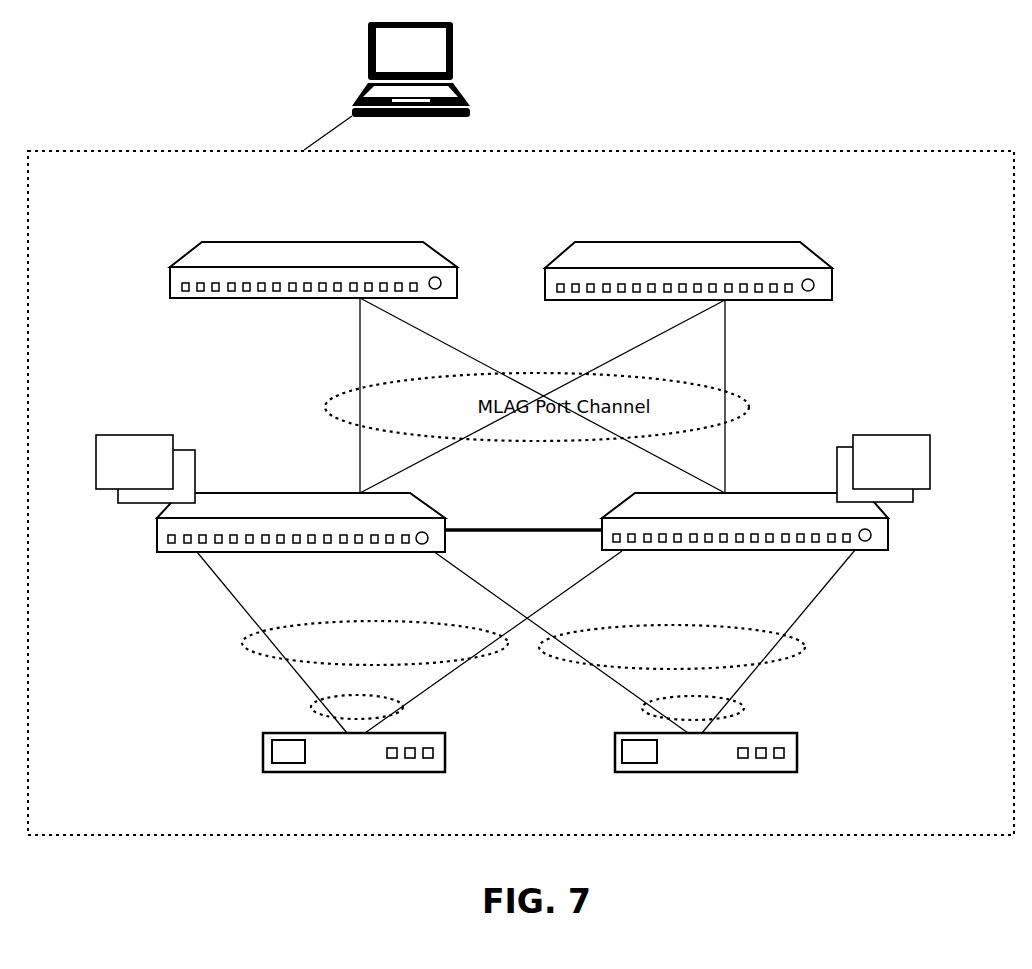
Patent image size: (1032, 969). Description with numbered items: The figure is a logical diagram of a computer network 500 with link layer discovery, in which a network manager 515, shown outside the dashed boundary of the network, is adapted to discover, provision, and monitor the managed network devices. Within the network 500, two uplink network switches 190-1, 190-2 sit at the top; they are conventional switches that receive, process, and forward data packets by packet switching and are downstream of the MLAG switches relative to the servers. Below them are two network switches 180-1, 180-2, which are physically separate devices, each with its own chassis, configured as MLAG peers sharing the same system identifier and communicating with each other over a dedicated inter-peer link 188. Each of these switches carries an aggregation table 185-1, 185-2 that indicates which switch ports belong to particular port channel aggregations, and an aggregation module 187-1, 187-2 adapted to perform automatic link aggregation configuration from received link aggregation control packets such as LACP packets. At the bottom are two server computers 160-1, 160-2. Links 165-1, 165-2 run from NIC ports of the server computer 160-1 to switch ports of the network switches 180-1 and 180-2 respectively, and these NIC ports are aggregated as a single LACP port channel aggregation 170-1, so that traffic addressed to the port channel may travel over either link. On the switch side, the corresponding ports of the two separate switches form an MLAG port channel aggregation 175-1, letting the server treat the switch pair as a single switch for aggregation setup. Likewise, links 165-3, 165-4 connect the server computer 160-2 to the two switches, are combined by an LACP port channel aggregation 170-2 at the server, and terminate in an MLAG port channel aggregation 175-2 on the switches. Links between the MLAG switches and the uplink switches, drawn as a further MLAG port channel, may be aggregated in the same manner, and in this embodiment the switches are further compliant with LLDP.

The computer network 500 is at (760, 151).
The network manager 515 is at (368, 52).
The uplink network switch 190-1 is at (170, 292).
The uplink network switch 190-2 is at (832, 283).
The network switch 180-1 is at (313, 492).
The network switch 180-2 is at (635, 492).
The aggregation table 185-1 is at (137, 503).
The aggregation table 185-2 is at (900, 503).
The aggregation module 187-1 is at (118, 434).
The aggregation module 187-2 is at (907, 434).
The inter-peer link 188 is at (480, 525).
The link 165-1 is at (243, 605).
The link 165-2 is at (560, 594).
The link 165-3 is at (461, 573).
The link 165-4 is at (797, 616).
The MLAG port channel aggregation 175-1 is at (243, 645).
The MLAG port channel aggregation 175-2 is at (805, 647).
The LACP port channel aggregation 170-1 is at (312, 712).
The LACP port channel aggregation 170-2 is at (643, 710).
The server computer 160-1 is at (263, 764).
The server computer 160-2 is at (615, 757).